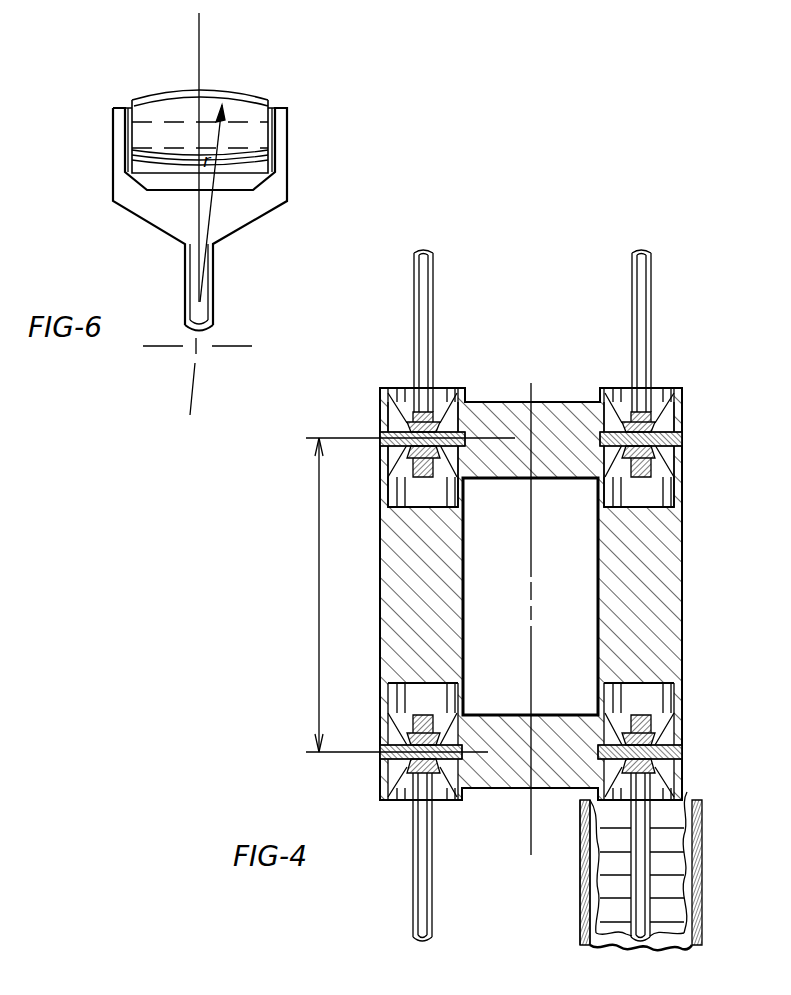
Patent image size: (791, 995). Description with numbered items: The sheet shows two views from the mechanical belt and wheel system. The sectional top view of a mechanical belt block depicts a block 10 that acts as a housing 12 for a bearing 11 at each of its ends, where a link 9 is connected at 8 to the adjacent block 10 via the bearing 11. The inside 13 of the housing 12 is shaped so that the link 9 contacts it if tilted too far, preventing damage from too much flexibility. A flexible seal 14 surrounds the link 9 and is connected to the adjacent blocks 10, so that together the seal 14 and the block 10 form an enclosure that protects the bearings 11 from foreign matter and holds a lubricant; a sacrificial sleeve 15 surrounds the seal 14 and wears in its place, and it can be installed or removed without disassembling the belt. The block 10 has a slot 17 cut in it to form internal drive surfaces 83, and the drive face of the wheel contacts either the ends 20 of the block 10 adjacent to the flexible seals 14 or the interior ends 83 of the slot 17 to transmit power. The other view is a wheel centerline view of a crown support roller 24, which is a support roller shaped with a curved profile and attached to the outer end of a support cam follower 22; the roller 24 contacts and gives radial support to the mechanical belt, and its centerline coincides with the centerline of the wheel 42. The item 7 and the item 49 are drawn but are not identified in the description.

In FIG. 4, the container / cup 7 is at (657, 866).
In FIG. 4, the connection 8 is at (684, 442).
In FIG. 4, the link 9 is at (413, 330).
In FIG. 4, the block 10 is at (683, 623).
In FIG. 4, the bearing 11 is at (652, 745).
In FIG. 4, the housing 12 is at (653, 700).
In FIG. 4, the inside 13 is at (658, 410).
In FIG. 4, the flexible seal 14 is at (318, 622).
In FIG. 4, the sacrificial sleeve 15 is at (582, 930).
In FIG. 4, the slot 17 is at (567, 630).
In FIG. 4, the end of the block 20 is at (542, 403).
In FIG. 6, the support cam follower 22 is at (288, 190).
In FIG. 6, the crown support roller 24 is at (237, 92).
In FIG. 6, the centerline of the wheel 42 is at (200, 42).
In FIG. 6, the lid / rim 49 is at (288, 133).
In FIG. 4, the internal drive surface 83 is at (522, 480).